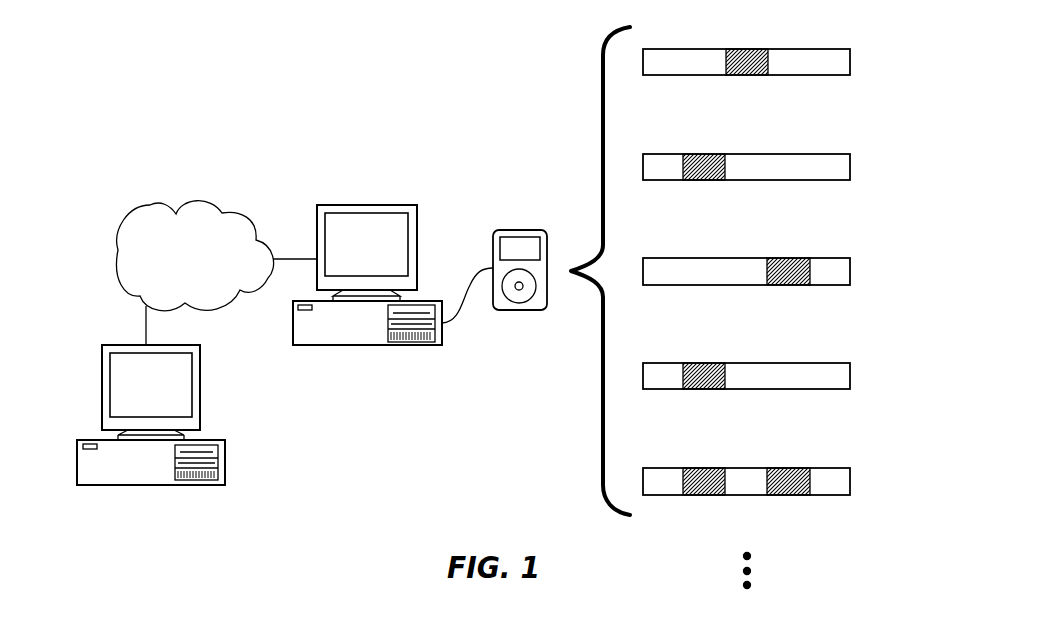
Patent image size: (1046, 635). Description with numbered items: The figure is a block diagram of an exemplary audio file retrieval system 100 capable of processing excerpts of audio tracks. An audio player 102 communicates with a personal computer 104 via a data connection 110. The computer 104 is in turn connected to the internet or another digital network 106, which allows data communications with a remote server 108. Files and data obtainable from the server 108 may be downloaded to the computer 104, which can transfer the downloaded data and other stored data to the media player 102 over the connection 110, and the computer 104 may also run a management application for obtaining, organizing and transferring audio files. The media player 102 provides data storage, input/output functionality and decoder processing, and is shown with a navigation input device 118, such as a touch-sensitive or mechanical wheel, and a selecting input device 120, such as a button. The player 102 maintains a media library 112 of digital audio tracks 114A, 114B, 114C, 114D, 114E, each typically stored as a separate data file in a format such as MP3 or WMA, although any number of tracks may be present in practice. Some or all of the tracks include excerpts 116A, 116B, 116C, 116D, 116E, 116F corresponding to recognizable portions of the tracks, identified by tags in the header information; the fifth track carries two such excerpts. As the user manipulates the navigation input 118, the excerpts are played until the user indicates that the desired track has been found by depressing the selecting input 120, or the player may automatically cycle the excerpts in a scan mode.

The audio file retrieval system 100 is at (462, 110).
The audio player 102 is at (533, 230).
The personal computer 104 is at (368, 205).
The digital network 106 is at (216, 208).
The remote server 108 is at (120, 345).
The data connection 110 is at (470, 276).
The media library 112 is at (600, 405).
The digital audio track 114A is at (785, 74).
The digital audio track 114B is at (785, 178).
The digital audio track 114C is at (785, 283).
The digital audio track 114D is at (785, 388).
The digital audio track 114E is at (785, 492).
The excerpt 116A is at (745, 77).
The excerpt 116B is at (704, 183).
The excerpt 116C is at (789, 288).
The excerpt 116D is at (704, 392).
The excerpt 116E is at (704, 497).
The excerpt 116F is at (789, 497).
The navigation input device 118 is at (513, 299).
The selecting input device 120 is at (522, 290).